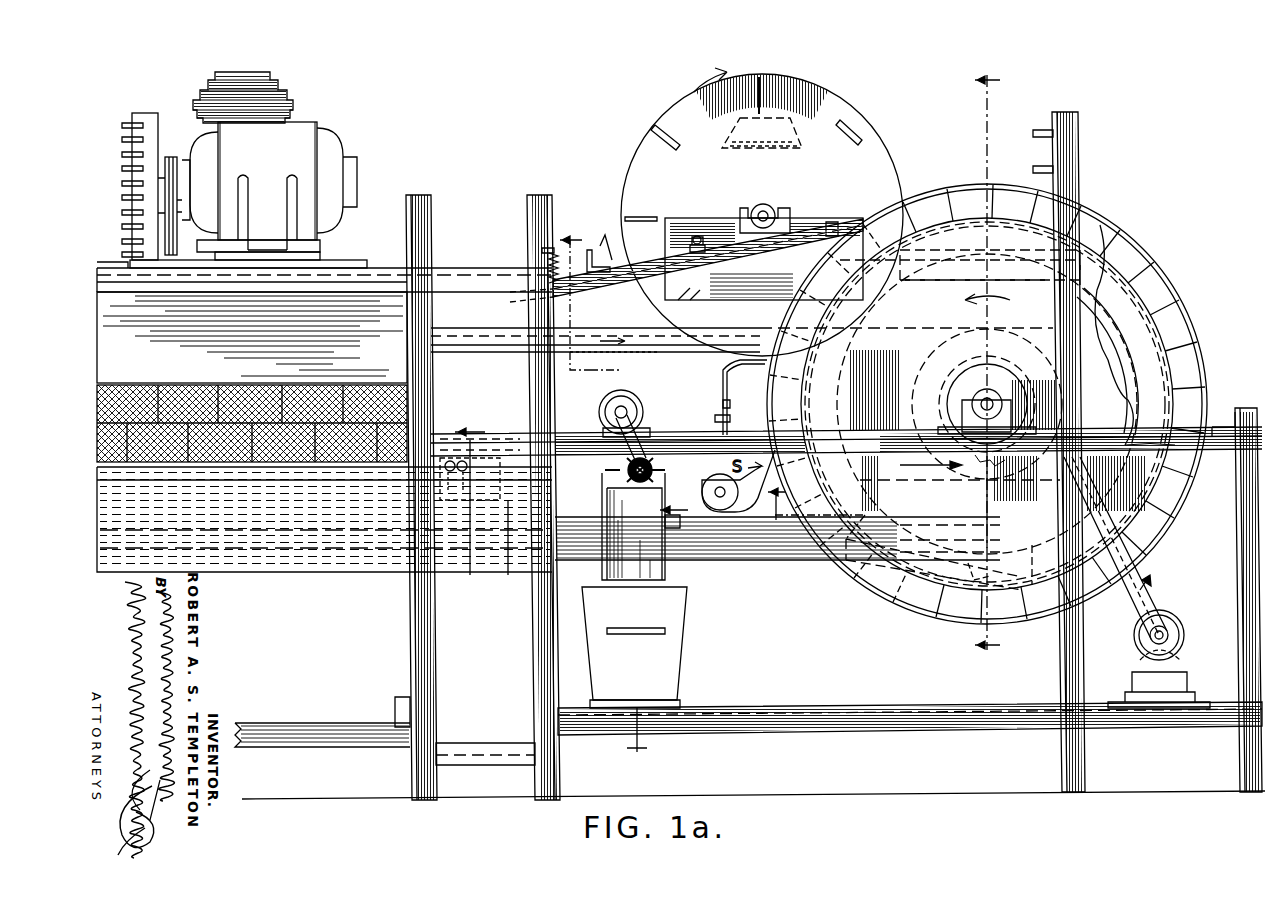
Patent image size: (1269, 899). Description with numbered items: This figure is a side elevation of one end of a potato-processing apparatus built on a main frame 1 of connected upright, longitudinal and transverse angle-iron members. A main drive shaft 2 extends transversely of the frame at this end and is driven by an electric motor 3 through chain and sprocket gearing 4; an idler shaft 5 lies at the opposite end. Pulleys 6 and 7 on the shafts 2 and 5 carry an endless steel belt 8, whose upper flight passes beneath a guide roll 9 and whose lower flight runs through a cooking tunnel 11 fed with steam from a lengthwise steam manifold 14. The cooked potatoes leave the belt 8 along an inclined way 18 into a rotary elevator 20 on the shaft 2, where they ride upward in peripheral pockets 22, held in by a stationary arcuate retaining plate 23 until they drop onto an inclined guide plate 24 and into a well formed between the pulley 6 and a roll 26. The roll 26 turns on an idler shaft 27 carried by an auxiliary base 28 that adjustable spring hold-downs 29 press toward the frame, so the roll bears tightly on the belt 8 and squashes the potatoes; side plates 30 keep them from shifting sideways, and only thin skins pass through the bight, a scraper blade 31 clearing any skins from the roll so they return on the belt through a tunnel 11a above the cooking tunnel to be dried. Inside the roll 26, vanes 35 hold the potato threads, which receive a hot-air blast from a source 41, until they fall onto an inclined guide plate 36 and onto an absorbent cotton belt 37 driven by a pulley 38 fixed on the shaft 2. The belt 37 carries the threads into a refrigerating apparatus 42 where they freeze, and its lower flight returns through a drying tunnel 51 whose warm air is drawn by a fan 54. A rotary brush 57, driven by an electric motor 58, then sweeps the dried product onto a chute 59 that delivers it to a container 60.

The main frame 1 is at (1240, 582).
The main drive shaft 2 is at (989, 400).
The electric motor 3 is at (1182, 636).
The chain and sprocket gearing 4 is at (1135, 584).
The idler shaft 5 is at (987, 362).
The pulley 6 is at (1128, 340).
The pulley 7 is at (895, 536).
The belt 8 is at (1135, 366).
The guide roll 9 is at (703, 498).
The cooking tunnel 11 is at (312, 553).
The tunnel 11a is at (324, 519).
The steam manifold 14 is at (243, 545).
The inclined way 18 is at (955, 548).
The rotary elevator 20 is at (1120, 300).
The peripheral pocket 22 is at (1170, 312).
The arcuate retaining plate 23 is at (1185, 368).
The guide plate 24 is at (985, 243).
The roll 26 is at (870, 150).
The idler shaft 27 is at (766, 207).
The auxiliary base 28 is at (595, 282).
The spring hold-down 29 is at (550, 252).
The side plate 30 is at (915, 292).
The scraper blade 31 is at (770, 360).
The vane 35 is at (652, 210).
The guide plate 36 is at (836, 218).
The absorbent belt 37 is at (640, 335).
The pulley 38 is at (1000, 345).
The hot air source 41 is at (787, 150).
The refrigerating apparatus 42 is at (252, 337).
The drying tunnel 51 is at (324, 473).
The fan 54 is at (489, 466).
The rotary brush 57 is at (660, 470).
The electric motor 58 is at (632, 398).
The chute 59 is at (641, 525).
The container 60 is at (648, 612).